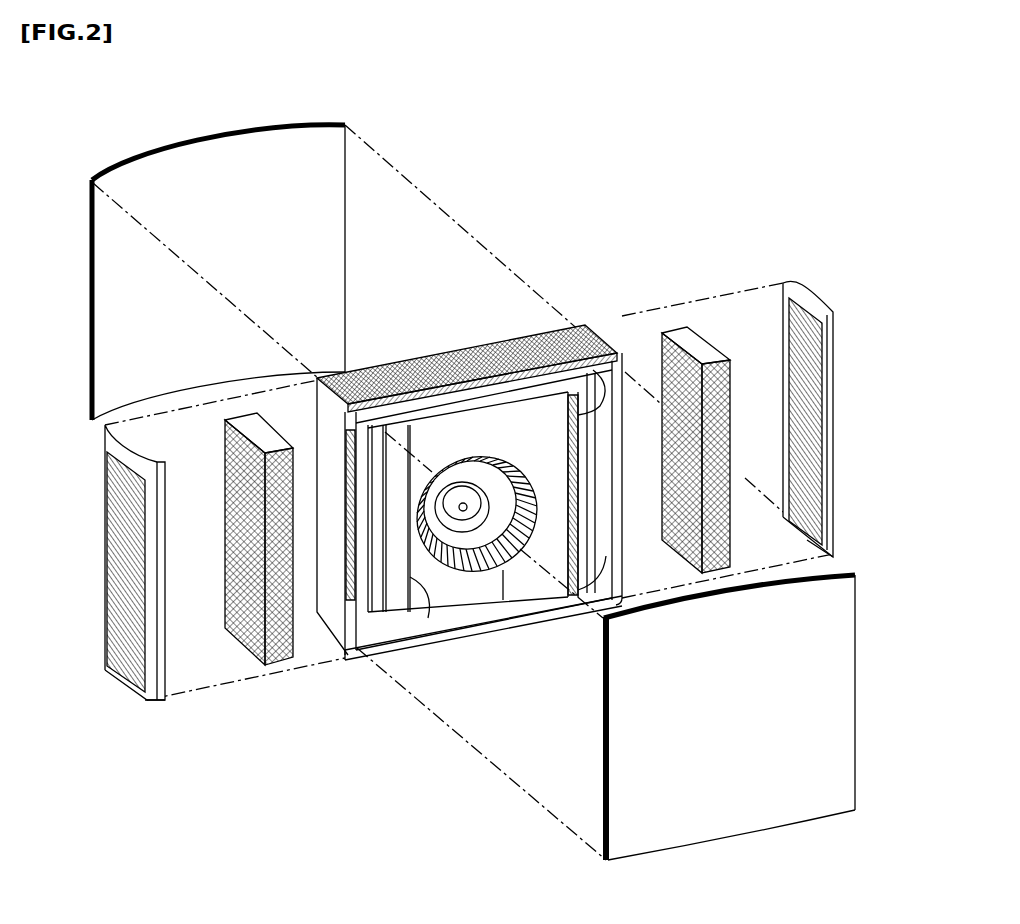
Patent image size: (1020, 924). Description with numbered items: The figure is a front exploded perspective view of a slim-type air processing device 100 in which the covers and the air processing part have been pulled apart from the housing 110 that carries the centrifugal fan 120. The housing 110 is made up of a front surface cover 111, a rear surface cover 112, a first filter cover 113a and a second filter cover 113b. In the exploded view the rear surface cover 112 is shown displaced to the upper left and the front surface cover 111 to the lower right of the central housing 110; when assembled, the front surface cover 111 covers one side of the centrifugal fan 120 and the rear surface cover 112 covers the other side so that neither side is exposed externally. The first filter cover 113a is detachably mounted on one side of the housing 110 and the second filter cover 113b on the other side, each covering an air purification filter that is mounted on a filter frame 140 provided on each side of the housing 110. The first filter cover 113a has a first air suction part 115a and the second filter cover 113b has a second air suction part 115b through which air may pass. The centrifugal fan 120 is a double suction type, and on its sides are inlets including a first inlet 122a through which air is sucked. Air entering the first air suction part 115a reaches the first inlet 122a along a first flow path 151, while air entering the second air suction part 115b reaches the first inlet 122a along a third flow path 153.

The slim-type air processing device 100 is at (689, 107).
The front surface cover 111 is at (743, 822).
The rear surface cover 112 is at (229, 163).
The first filter cover 113a is at (91, 593).
The second filter cover 113b is at (844, 415).
The first air suction part 115a is at (107, 581).
The second air suction part 115b is at (818, 419).
The centrifugal fan 120 is at (455, 575).
The housing 110 is at (503, 600).
The first inlet 122a is at (520, 630).
The filter frame 140 is at (483, 458).
The first flow path 151 is at (420, 616).
The third flow path 153 is at (599, 342).